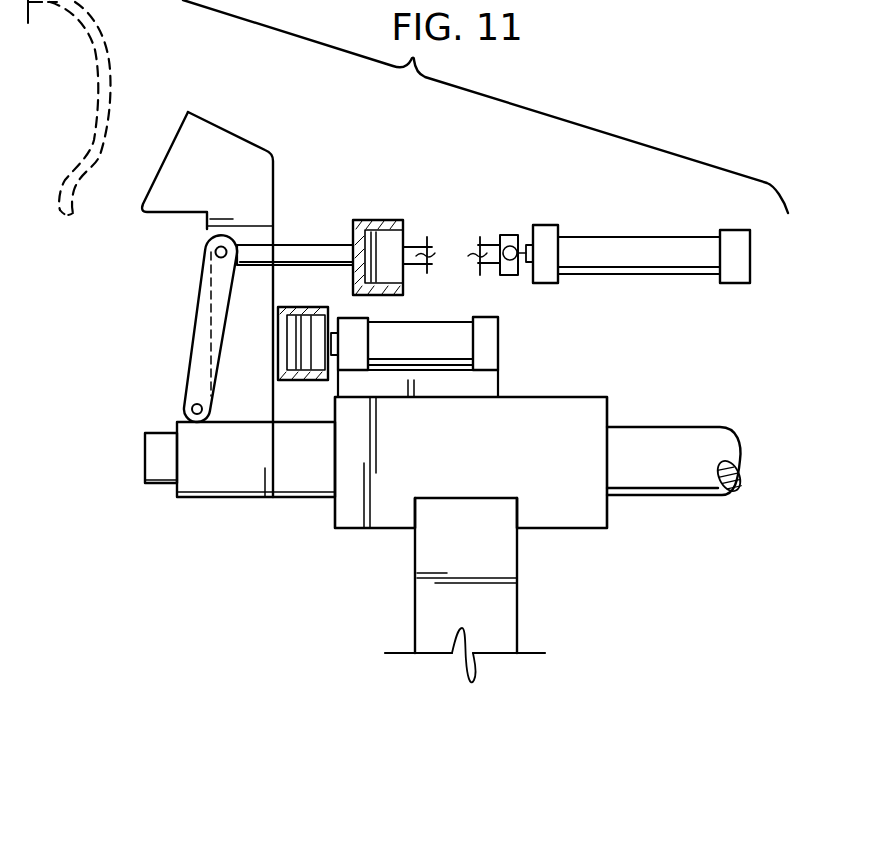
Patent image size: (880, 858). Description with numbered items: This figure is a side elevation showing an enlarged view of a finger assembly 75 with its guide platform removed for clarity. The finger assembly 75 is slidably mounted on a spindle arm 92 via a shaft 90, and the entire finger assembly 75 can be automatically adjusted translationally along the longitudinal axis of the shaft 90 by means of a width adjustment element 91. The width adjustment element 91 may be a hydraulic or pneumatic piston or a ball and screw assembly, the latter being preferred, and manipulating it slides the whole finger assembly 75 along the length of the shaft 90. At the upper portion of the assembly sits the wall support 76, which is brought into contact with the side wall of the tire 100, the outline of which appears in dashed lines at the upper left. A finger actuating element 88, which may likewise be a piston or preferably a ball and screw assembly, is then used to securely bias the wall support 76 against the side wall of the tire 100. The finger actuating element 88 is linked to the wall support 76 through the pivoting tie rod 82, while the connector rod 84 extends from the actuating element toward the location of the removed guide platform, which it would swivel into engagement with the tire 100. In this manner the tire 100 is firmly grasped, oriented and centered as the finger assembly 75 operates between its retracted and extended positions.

The finger assembly 75 is at (672, 366).
The wall support 76 is at (189, 113).
The tie rod 82 is at (188, 340).
The connector rod 84 is at (303, 242).
The finger actuating element 88 is at (633, 203).
The shaft 90 is at (146, 452).
The width adjustment element 91 is at (455, 296).
The spindle arm 92 is at (518, 611).
The tire 100 is at (116, 75).